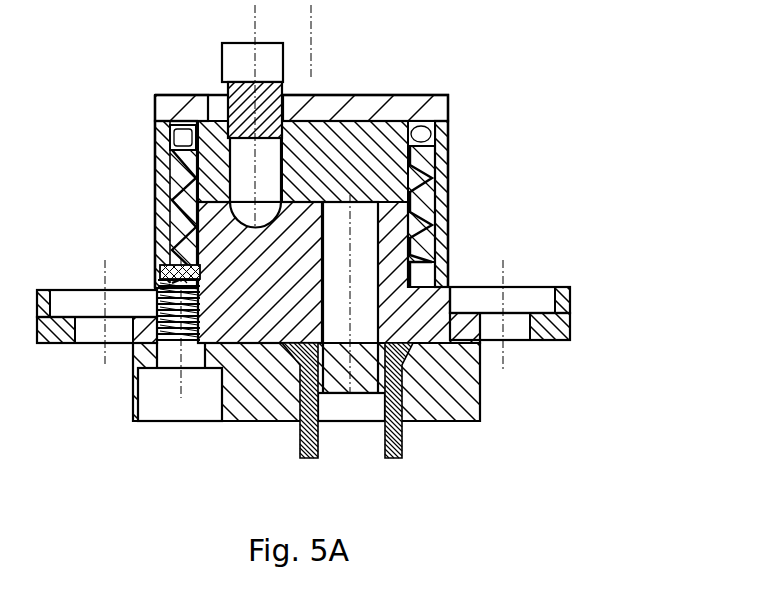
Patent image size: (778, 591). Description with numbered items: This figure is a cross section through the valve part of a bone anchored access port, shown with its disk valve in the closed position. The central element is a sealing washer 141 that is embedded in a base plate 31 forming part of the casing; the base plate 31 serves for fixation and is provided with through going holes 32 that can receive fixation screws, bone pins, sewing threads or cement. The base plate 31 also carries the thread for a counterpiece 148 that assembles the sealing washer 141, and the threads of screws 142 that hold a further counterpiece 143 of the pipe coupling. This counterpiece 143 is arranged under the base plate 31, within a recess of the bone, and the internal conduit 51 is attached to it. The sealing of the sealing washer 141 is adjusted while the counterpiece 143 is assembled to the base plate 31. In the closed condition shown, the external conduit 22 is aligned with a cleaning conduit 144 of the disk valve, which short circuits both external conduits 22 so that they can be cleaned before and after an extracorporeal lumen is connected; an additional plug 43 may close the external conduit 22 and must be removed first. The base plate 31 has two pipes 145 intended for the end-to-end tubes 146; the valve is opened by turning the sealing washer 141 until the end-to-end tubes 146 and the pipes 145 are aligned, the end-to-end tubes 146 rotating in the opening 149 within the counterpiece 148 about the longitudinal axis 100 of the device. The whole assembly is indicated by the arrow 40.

The fixing assembly 40 is at (488, 186).
The opening 149 is at (400, 96).
The end-to-end tubes 146 is at (287, 110).
The cleaning conduit 144 is at (178, 215).
The counterpiece 148 is at (175, 172).
The external conduit 22 is at (188, 135).
The sealing washer 141 is at (430, 140).
The pipe 145 is at (372, 228).
The plug 43 is at (240, 90).
The longitudinal axis 100 is at (312, 22).
The through going holes 32 is at (517, 297).
The base plate 31 is at (560, 322).
The counterpiece 143 is at (260, 421).
The internal conduit 51 is at (400, 441).
The screws 142 is at (157, 328).